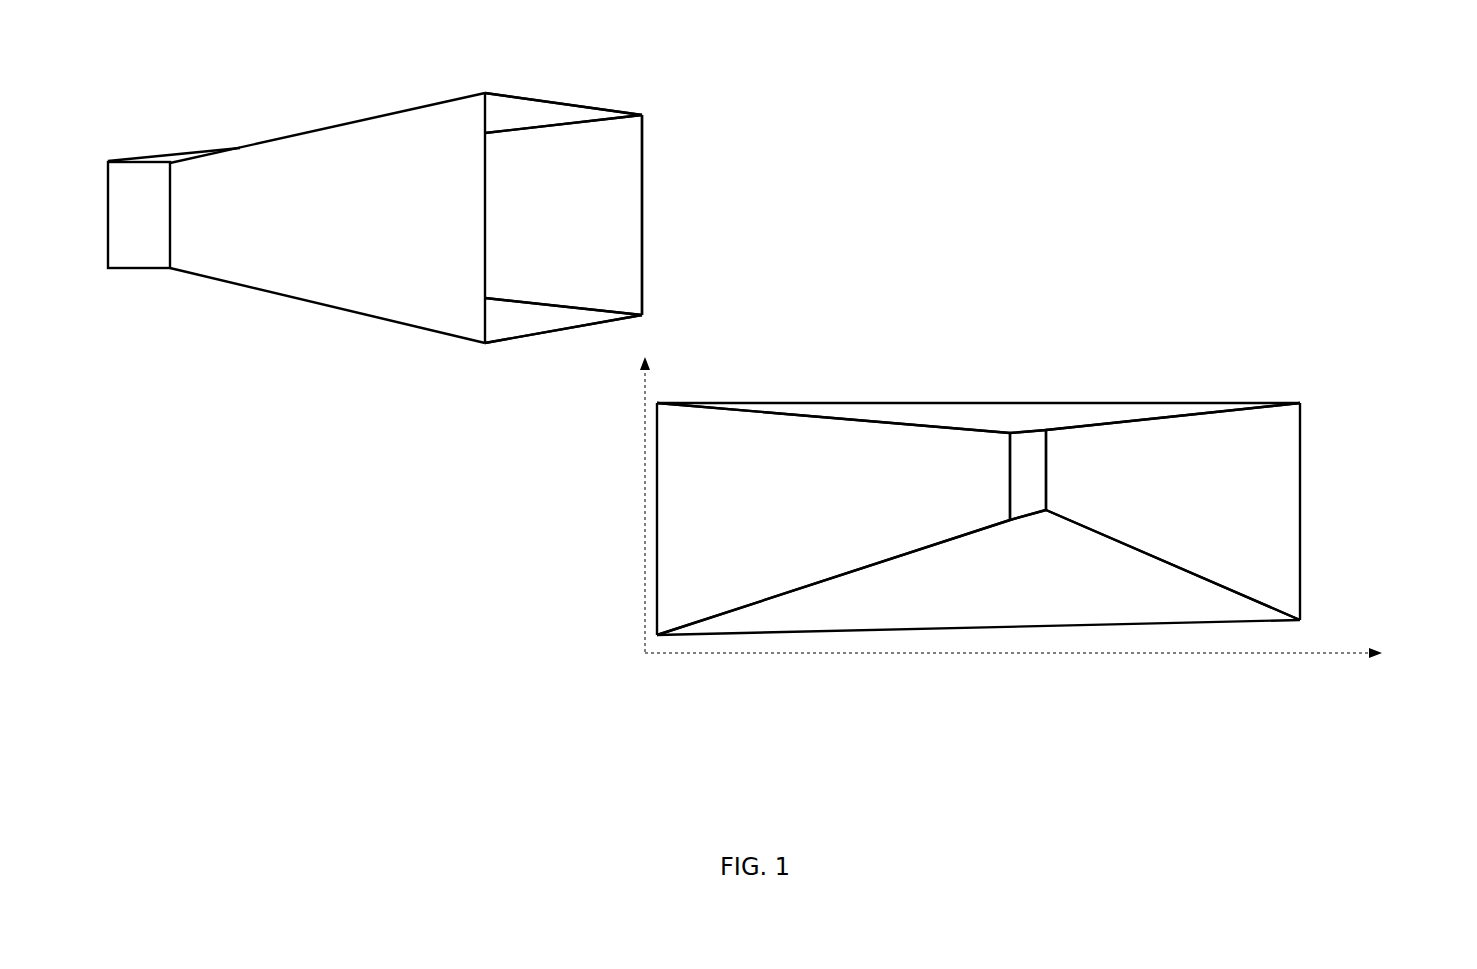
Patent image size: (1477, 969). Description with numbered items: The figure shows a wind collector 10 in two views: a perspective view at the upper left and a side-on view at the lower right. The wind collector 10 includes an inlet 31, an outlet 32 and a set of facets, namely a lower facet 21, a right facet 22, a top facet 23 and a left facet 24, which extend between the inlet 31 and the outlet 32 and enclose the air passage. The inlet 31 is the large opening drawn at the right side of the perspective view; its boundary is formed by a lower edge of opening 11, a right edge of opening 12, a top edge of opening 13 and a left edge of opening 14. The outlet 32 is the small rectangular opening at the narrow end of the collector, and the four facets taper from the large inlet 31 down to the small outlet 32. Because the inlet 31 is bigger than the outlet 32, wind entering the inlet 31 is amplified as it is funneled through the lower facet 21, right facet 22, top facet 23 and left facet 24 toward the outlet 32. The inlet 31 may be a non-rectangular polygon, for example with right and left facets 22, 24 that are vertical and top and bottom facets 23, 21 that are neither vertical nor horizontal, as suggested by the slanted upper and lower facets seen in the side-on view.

The wind collector 10 is at (704, 403).
The lower edge of opening 11 is at (603, 325).
The right edge of opening 12 is at (642, 242).
The top edge of opening 13 is at (575, 102).
The left edge of opening 14 is at (483, 165).
The lower facet 21 is at (526, 332).
The right facet 22 is at (571, 251).
The top facet 23 is at (524, 126).
The left facet 24 is at (412, 259).
The inlet 31 is at (612, 185).
The outlet 32 is at (147, 231).